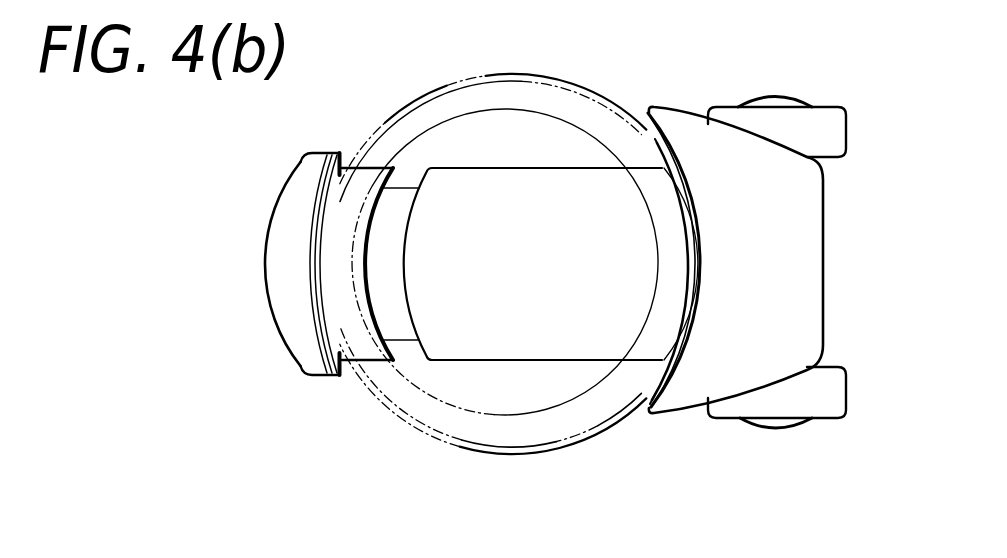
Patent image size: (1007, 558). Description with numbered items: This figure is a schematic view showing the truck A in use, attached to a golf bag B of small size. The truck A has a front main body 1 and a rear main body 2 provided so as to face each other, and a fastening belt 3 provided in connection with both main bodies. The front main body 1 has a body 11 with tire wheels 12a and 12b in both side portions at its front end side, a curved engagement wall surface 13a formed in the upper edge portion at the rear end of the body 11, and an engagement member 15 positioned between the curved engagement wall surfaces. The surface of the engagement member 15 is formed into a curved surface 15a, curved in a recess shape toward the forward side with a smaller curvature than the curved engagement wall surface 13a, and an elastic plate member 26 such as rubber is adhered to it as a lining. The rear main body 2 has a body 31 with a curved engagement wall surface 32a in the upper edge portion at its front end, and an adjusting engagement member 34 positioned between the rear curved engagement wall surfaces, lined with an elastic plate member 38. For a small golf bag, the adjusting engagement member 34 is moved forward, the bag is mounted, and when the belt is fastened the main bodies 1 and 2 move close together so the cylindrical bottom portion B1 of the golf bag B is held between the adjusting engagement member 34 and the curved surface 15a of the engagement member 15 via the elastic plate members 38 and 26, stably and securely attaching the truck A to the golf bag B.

The front main body 1 is at (721, 258).
The rear main body 2 is at (330, 257).
The fastening belt 3 is at (376, 112).
The body 11 is at (822, 210).
The tire wheel 12a is at (796, 79).
The tire wheel 12b is at (830, 393).
The curved engagement wall surface 13a is at (702, 250).
The engagement member 15 is at (654, 191).
The curved surface 15a is at (682, 310).
The elastic plate member 26 is at (678, 193).
The body 31 is at (280, 240).
The curved engagement wall surface 32a is at (330, 338).
The adjusting engagement member 34 is at (332, 238).
The elastic plate member 38 is at (328, 300).
The truck A is at (748, 72).
The golf bag B is at (428, 416).
The cylindrical bottom portion B1 is at (478, 425).